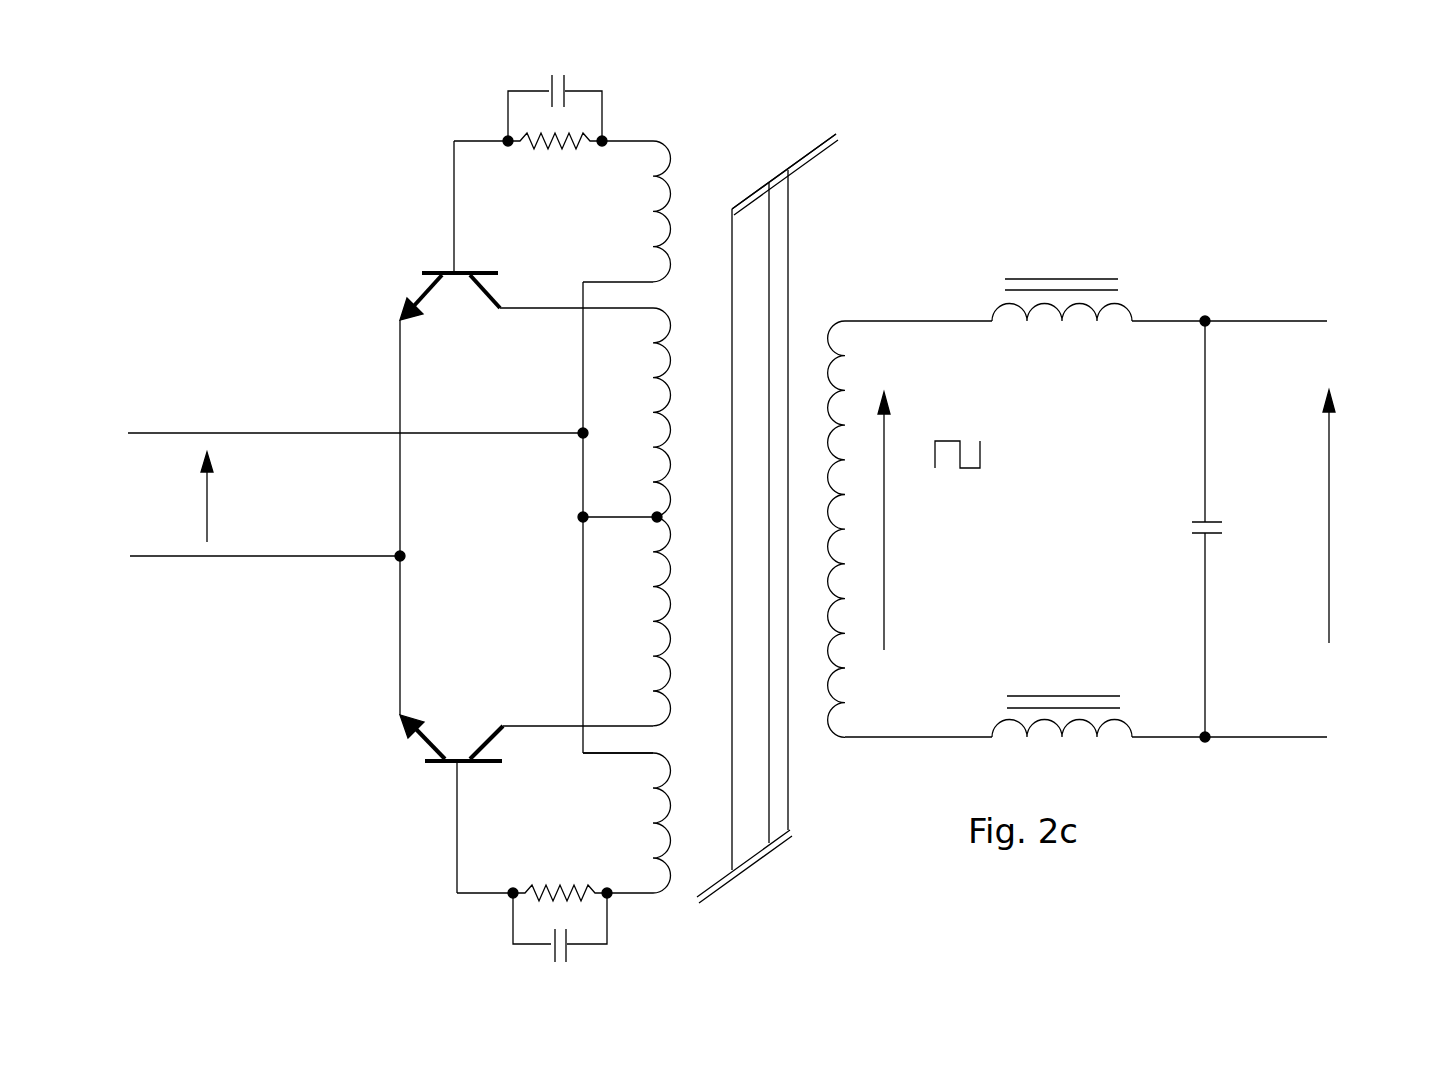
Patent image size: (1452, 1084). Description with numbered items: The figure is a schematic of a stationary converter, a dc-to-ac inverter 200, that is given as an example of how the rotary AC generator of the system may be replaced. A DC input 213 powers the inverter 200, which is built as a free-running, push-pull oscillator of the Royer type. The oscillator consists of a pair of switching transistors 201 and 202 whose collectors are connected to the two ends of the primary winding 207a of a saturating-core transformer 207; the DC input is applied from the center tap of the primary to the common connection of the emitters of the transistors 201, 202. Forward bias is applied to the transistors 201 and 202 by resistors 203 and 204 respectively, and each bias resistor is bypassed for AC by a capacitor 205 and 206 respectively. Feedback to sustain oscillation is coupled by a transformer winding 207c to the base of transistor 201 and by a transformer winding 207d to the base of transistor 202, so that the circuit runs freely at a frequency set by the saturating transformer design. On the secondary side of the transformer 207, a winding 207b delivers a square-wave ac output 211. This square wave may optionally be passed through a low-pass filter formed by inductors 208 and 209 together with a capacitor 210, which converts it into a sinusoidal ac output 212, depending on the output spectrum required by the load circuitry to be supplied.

The dc-to-ac inverter 200 is at (1163, 191).
The switching transistor 201 is at (467, 263).
The switching transistor 202 is at (449, 722).
The resistor 203 is at (550, 157).
The resistor 204 is at (532, 870).
The capacitor 205 is at (588, 79).
The capacitor 206 is at (545, 958).
The saturating-core transformer 207 is at (793, 805).
The primary winding 207a is at (650, 448).
The transformer winding 207b is at (830, 320).
The transformer winding 207c is at (686, 167).
The transformer winding 207d is at (600, 757).
The inductor 208 is at (1089, 272).
The inductor 209 is at (1072, 695).
The capacitor 210 is at (1208, 412).
The square-wave ac output 211 is at (897, 420).
The sinusoidal ac output 212 is at (1345, 430).
The DC input 213 is at (212, 503).